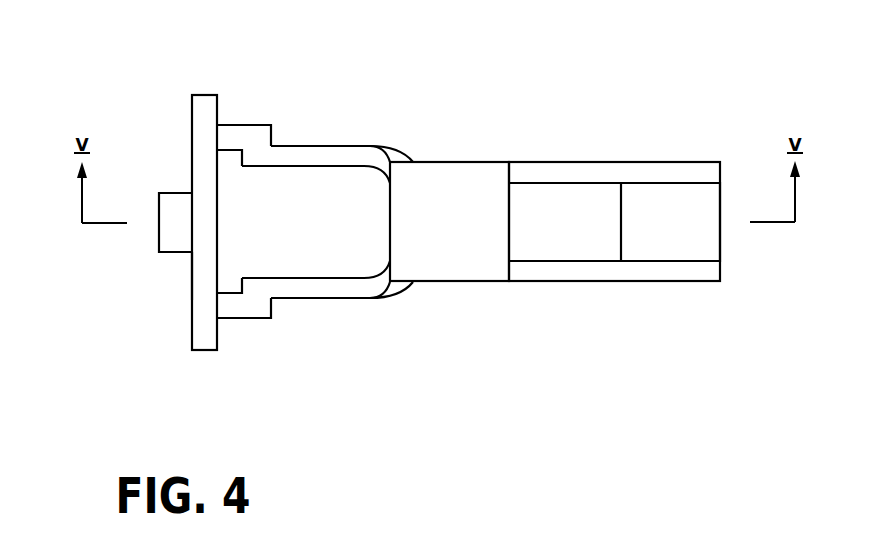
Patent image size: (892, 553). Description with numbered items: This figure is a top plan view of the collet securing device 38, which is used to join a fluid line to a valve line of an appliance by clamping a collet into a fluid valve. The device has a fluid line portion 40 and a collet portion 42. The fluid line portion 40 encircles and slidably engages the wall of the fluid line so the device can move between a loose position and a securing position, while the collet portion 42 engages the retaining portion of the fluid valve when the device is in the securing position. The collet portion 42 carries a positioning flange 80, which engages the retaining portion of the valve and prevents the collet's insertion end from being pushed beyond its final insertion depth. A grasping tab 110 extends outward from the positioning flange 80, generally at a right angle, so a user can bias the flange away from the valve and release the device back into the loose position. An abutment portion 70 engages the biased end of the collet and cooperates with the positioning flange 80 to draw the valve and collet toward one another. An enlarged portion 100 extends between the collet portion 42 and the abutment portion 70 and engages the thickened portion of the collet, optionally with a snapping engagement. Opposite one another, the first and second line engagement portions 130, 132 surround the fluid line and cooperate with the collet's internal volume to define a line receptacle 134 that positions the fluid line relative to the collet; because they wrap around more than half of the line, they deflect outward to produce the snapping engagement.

The collet securing device 38 is at (297, 100).
The fluid line portion 40 is at (558, 135).
The collet portion 42 is at (178, 323).
The abutment portion 70 is at (388, 207).
The positioning flange 80 is at (193, 265).
The enlarged portion 100 is at (315, 290).
The grasping tab 110 is at (172, 213).
The first line engagement portion 130 is at (685, 227).
The second line engagement portion 132 is at (453, 185).
The line receptacle 134 is at (582, 207).